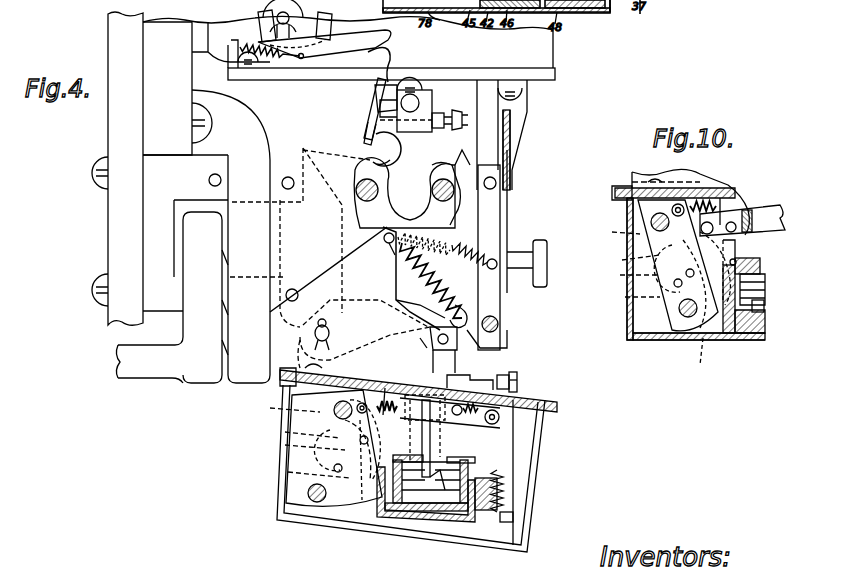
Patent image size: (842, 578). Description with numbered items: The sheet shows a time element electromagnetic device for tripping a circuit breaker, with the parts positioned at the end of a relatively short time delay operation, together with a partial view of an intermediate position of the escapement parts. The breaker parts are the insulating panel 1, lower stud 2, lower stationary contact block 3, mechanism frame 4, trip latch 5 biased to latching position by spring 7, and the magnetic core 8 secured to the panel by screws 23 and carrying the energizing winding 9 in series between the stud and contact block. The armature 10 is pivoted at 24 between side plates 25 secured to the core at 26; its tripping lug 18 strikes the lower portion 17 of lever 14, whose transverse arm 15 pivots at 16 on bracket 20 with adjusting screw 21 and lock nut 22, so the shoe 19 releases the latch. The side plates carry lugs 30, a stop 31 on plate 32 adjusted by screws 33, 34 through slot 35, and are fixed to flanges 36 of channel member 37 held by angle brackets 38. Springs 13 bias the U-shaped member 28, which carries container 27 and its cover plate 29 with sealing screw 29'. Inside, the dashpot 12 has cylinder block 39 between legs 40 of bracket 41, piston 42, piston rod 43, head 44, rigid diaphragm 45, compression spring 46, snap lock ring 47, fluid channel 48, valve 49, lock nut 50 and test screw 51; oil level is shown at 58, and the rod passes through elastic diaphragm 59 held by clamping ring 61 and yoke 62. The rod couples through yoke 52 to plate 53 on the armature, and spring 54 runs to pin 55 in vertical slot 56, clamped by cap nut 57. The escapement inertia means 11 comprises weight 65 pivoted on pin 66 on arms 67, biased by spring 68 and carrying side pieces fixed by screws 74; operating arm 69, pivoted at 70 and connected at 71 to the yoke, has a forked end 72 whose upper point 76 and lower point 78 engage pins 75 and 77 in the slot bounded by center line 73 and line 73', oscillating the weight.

In FIG. 4, the mounting base or panel 1 is at (118, 219).
In FIG. 4, the lower stud 2 is at (138, 372).
In FIG. 4, the lower stationary contact block 3 is at (150, 110).
In FIG. 4, the mechanism frame 4 is at (553, 57).
In FIG. 4, the trip latch 5 is at (352, 40).
In FIG. 4, the spring 7 is at (258, 45).
In FIG. 4, the magnetic core 8 is at (152, 241).
In FIG. 4, the energizing winding 9 is at (190, 260).
In FIG. 4, the armature 10 is at (300, 223).
In FIG. 4, the escapement inertia means 11 is at (359, 496).
In FIG. 4, the dashpot 12 is at (388, 337).
In FIG. 4, the spring 13 is at (357, 278).
In FIG. 4, the lever 14 is at (376, 98).
In FIG. 4, the transverse arm 15 is at (386, 84).
In FIG. 4, the pivot 16 is at (420, 106).
In FIG. 4, the lower portion of lever 17 is at (366, 130).
In FIG. 4, the tripping lug 18 is at (386, 158).
In FIG. 4, the shoe 19 is at (388, 54).
In FIG. 4, the bracket 20 is at (413, 135).
In FIG. 4, the screw 21 is at (459, 115).
In FIG. 4, the lock nut 22 is at (438, 130).
In FIG. 4, the screws 23 is at (95, 182).
In FIG. 4, the pivot of armature 24 is at (330, 332).
In FIG. 4, the side plates 25 is at (470, 163).
In FIG. 4, the securing points of side plates 26 is at (209, 180).
In FIG. 4, the reservoir or container 27 is at (540, 480).
In FIG. 10, the reservoir or container 27 is at (716, 340).
In FIG. 4, the U-shaped member 28 is at (302, 357).
In FIG. 10, the U-shaped member 28 is at (635, 180).
In FIG. 4, the supporting plate 29 is at (420, 390).
In FIG. 10, the supporting plate 29 is at (659, 189).
In FIG. 4, the sealing screw 29' is at (330, 362).
In FIG. 10, the sealing screw 29' is at (666, 167).
In FIG. 4, the lugs 30 is at (458, 302).
In FIG. 4, the stop 31 is at (401, 270).
In FIG. 4, the plate 32 is at (375, 210).
In FIG. 4, the screw 33 is at (378, 192).
In FIG. 4, the screw 34 is at (432, 190).
In FIG. 4, the slot 35 is at (445, 182).
In FIG. 4, the flanges 36 is at (528, 340).
In FIG. 4, the channel member 37 is at (500, 322).
In FIG. 4, the angle brackets 38 is at (520, 128).
In FIG. 4, the cylinder block 39 is at (505, 470).
In FIG. 10, the cylinder block 39 is at (748, 340).
In FIG. 4, the legs 40 is at (485, 428).
In FIG. 10, the legs 40 is at (739, 268).
In FIG. 4, the U-shaped member 41 is at (383, 388).
In FIG. 10, the U-shaped member 41 is at (722, 196).
In FIG. 4, the piston 42 is at (452, 500).
In FIG. 10, the piston 42 is at (762, 320).
In FIG. 4, the piston rod 43 is at (433, 445).
In FIG. 4, the head 44 is at (408, 447).
In FIG. 10, the head 44 is at (760, 263).
In FIG. 4, the rigid diaphragm 45 is at (415, 490).
In FIG. 10, the rigid diaphragm 45 is at (764, 306).
In FIG. 4, the compression spring 46 is at (440, 495).
In FIG. 10, the compression spring 46 is at (765, 287).
In FIG. 4, the snap lock ring 47 is at (460, 457).
In FIG. 4, the channel 48 is at (483, 523).
In FIG. 4, the valve 49 is at (513, 517).
In FIG. 4, the lock nut 50 is at (520, 385).
In FIG. 4, the screw 51 is at (528, 540).
In FIG. 4, the yoke member 52 is at (453, 362).
In FIG. 4, the plate 53 is at (428, 338).
In FIG. 4, the spring 54 is at (460, 242).
In FIG. 4, the pin 55 is at (492, 258).
In FIG. 4, the vertical slot 56 is at (510, 200).
In FIG. 4, the cap nut 57 is at (520, 248).
In FIG. 4, the oil level line 58 is at (538, 425).
In FIG. 4, the elastic diaphragm 59 is at (478, 375).
In FIG. 4, the retainer clamping ring 61 is at (505, 378).
In FIG. 4, the yoke member 62 is at (426, 430).
In FIG. 4, the weight 65 is at (320, 418).
In FIG. 10, the weight 65 is at (648, 250).
In FIG. 4, the pin 66 is at (303, 445).
In FIG. 10, the pin 66 is at (630, 276).
In FIG. 4, the arms 67 is at (370, 445).
In FIG. 10, the arms 67 is at (695, 276).
In FIG. 4, the spring 68 is at (399, 417).
In FIG. 10, the spring 68 is at (720, 206).
In FIG. 4, the operating arm 69 is at (450, 413).
In FIG. 10, the operating arm 69 is at (785, 218).
In FIG. 4, the pivot 70 is at (492, 424).
In FIG. 4, the pivotal connection 71 is at (452, 408).
In FIG. 10, the pivotal connection 71 is at (718, 228).
In FIG. 4, the forked end 72 is at (365, 440).
In FIG. 10, the forked end 72 is at (706, 280).
In FIG. 4, the longitudinal center line 73 is at (316, 450).
In FIG. 10, the longitudinal center line 73 is at (632, 297).
In FIG. 4, the broken line 73' is at (282, 409).
In FIG. 10, the broken line 73' is at (615, 232).
In FIG. 4, the screws 74 is at (334, 409).
In FIG. 10, the screws 74 is at (652, 224).
In FIG. 4, the pin 75 is at (301, 448).
In FIG. 10, the pin 75 is at (641, 268).
In FIG. 4, the upper point 76 is at (357, 405).
In FIG. 10, the upper point 76 is at (680, 218).
In FIG. 4, the pin 77 is at (334, 472).
In FIG. 10, the pin 77 is at (674, 285).
In FIG. 4, the lower point 78 is at (367, 460).
In FIG. 10, the lower point 78 is at (697, 359).